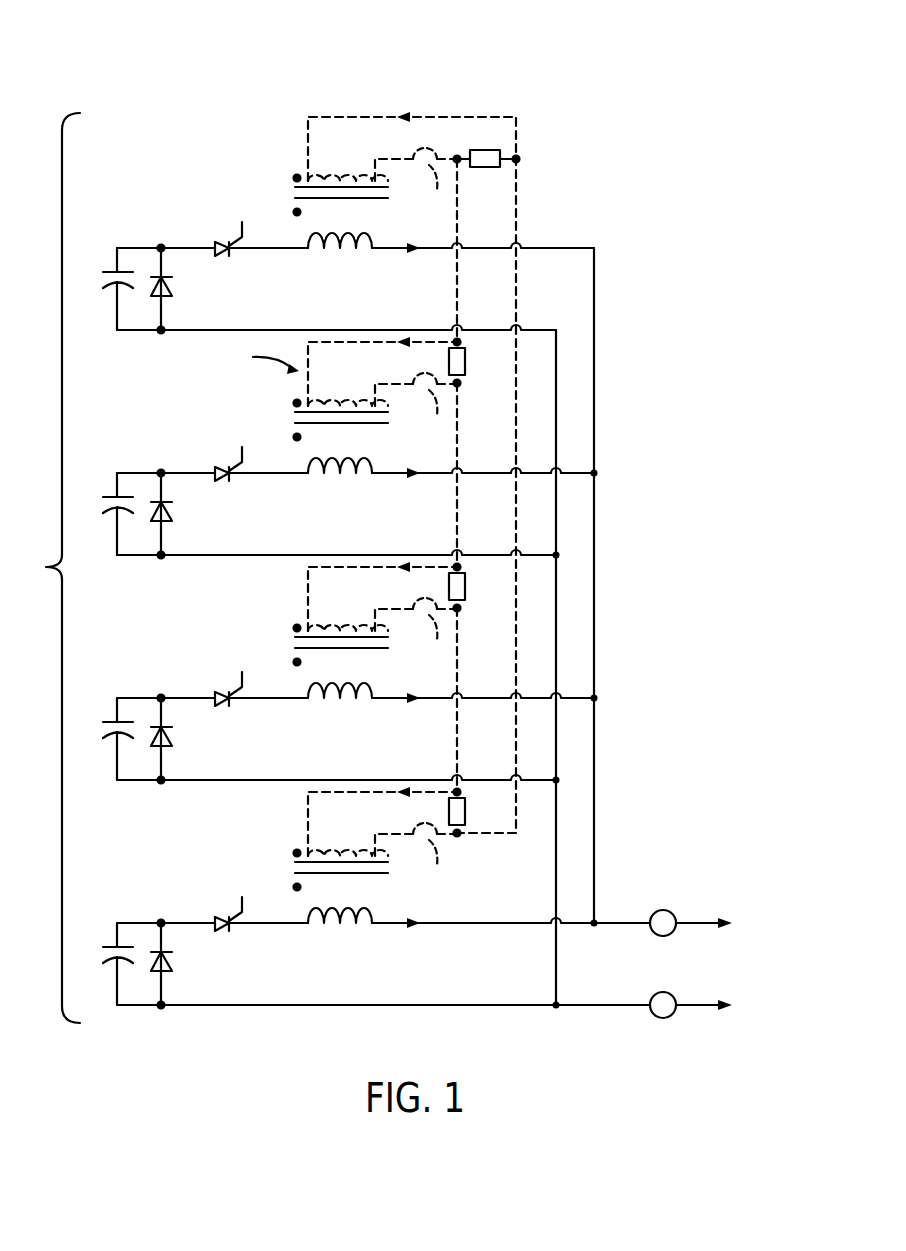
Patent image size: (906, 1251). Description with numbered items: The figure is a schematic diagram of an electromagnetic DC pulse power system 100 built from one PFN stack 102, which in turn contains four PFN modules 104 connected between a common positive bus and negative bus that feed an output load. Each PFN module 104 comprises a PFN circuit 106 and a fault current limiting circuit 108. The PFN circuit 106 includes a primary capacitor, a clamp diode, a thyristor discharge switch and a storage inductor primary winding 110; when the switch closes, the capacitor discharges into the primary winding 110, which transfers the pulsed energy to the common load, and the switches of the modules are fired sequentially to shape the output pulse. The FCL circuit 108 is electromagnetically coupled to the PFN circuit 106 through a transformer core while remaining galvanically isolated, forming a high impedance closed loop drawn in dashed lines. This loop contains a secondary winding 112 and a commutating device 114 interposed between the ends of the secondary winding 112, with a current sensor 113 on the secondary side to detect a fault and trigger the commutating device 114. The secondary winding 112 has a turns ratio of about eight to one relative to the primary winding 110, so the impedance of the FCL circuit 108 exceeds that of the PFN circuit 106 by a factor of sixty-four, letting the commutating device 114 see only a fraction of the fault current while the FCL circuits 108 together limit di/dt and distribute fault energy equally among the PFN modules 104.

The electromagnetic DC pulse power system 100 is at (134, 62).
The PFN stack 102 is at (44, 568).
The PFN module 104 is at (277, 227).
The PFN circuit 106 is at (184, 237).
The fault current limiting (FCL) circuit 108 is at (348, 92).
The storage inductor primary winding 110 is at (371, 234).
The secondary winding 112 is at (363, 518).
The current sensor 113 is at (431, 519).
The commutating device 114 is at (501, 154).